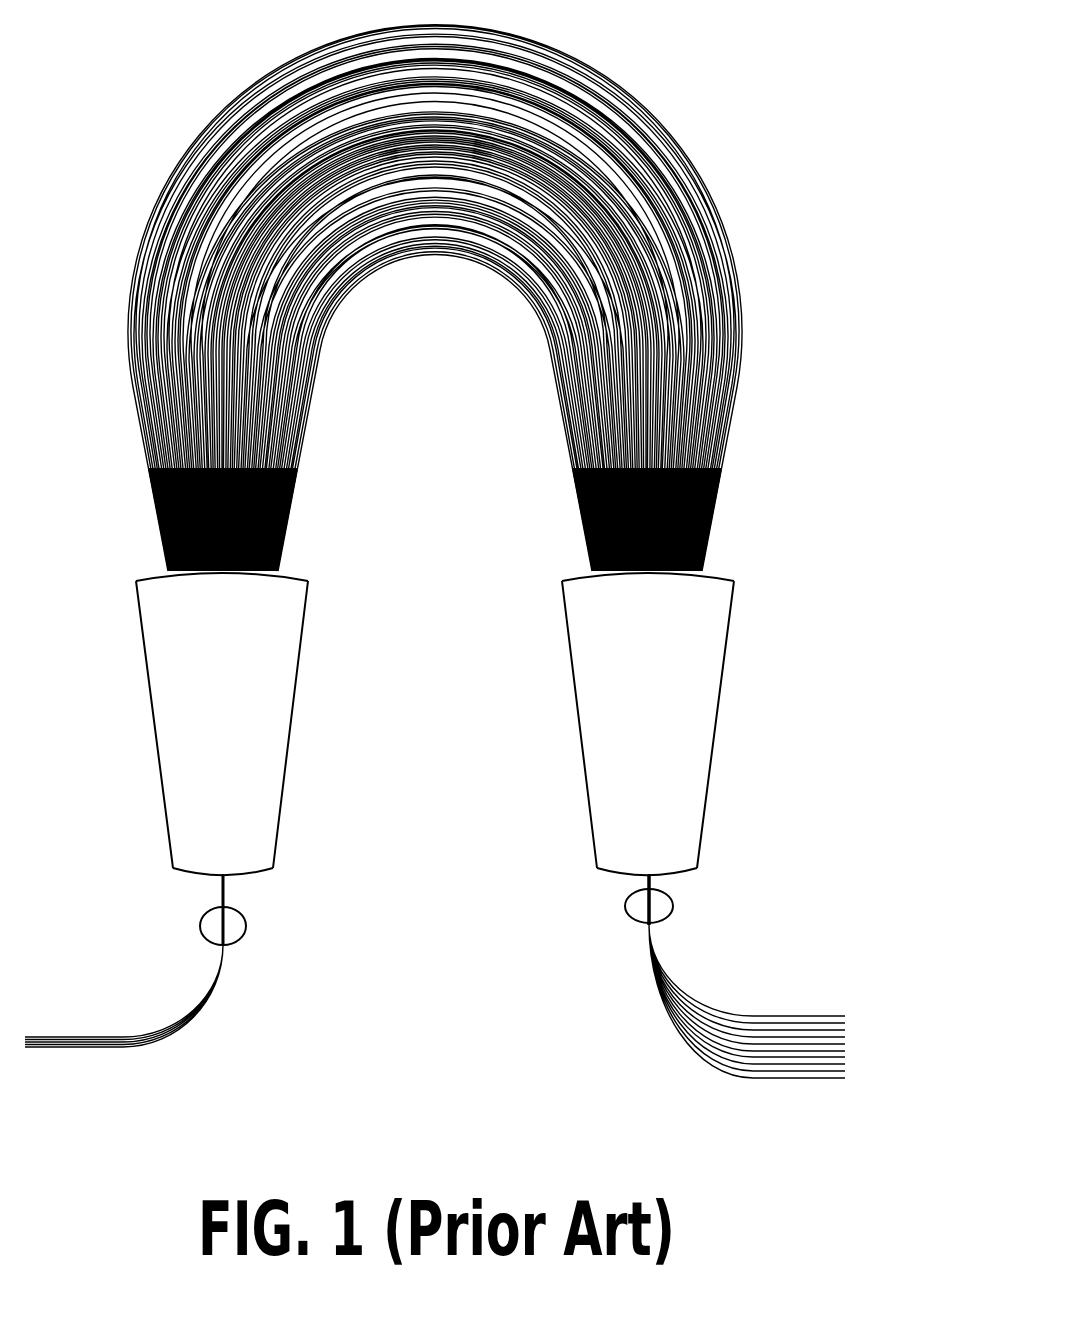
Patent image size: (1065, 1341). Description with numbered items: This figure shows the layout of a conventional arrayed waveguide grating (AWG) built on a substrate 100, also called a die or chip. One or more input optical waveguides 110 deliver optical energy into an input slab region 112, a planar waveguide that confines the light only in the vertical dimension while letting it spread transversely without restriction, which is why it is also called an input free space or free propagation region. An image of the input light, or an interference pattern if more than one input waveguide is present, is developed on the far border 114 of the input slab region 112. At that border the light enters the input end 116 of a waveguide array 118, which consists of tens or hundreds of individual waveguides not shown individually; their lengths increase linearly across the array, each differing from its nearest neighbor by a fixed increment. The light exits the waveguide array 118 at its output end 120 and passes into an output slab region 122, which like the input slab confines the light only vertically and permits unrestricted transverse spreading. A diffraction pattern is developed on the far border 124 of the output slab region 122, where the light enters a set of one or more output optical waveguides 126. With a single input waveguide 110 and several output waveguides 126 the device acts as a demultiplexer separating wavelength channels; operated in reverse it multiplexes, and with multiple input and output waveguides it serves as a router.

The substrate 100 is at (78, 52).
The input optical waveguide 110 is at (238, 918).
The input slab region 112 is at (236, 707).
The far border of the input slab region 114 is at (288, 574).
The input end of the waveguide array 116 is at (157, 548).
The waveguide array 118 is at (623, 83).
The output end of the waveguide array 120 is at (697, 548).
The output slab region 122 is at (660, 724).
The far border of the output slab region 124 is at (669, 863).
The output optical waveguide 126 is at (665, 898).